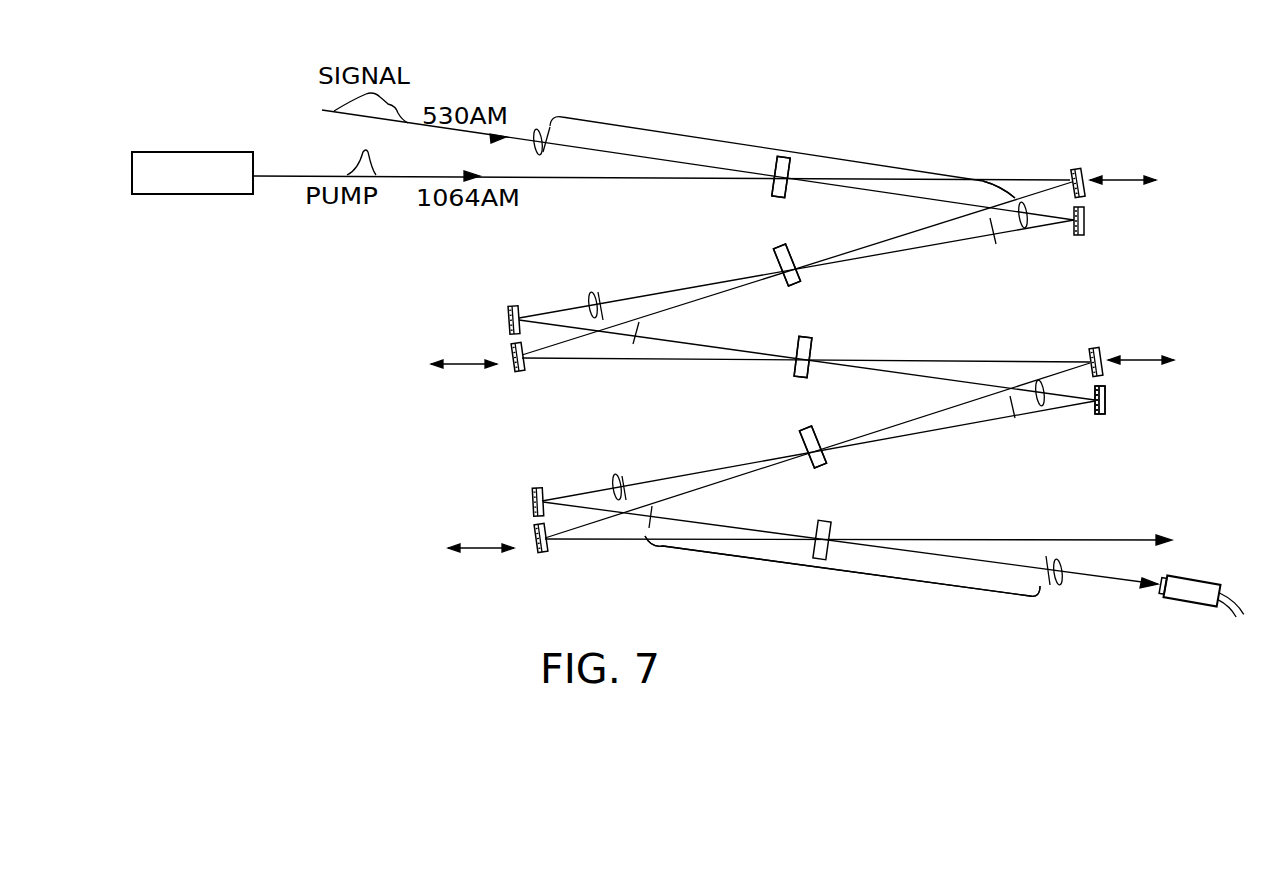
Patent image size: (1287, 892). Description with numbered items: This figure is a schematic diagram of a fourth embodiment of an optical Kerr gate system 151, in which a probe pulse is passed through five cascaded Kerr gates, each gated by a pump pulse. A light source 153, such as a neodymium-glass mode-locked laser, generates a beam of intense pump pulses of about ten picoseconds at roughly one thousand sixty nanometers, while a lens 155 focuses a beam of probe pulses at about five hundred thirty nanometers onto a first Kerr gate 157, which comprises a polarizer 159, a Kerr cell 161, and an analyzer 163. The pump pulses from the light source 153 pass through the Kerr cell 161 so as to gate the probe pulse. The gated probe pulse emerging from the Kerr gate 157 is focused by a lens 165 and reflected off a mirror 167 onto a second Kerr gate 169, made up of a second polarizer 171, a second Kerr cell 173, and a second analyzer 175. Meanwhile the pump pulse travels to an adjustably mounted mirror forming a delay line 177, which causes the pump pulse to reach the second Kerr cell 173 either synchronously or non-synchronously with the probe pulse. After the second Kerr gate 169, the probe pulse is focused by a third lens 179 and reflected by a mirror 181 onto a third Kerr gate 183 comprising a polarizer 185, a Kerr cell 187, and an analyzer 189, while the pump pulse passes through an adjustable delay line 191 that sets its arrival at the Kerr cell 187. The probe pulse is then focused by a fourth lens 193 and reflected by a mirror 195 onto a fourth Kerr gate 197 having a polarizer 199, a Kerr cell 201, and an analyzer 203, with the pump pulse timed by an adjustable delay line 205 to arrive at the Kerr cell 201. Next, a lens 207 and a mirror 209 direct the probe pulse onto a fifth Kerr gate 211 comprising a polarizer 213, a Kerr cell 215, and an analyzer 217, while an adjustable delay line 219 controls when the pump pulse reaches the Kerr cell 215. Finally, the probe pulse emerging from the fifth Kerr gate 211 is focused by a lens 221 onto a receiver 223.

The optical Kerr gate system 151 is at (766, 64).
The light source 153 is at (196, 165).
The lens 155 is at (536, 130).
The Kerr gate 157 is at (783, 150).
The polarizer 159 is at (549, 152).
The Kerr cell 161 is at (776, 196).
The analyzer 163 is at (1008, 222).
The lens 165 is at (1022, 206).
The mirror 167 is at (1084, 230).
The second Kerr gate 169 is at (779, 246).
The second polarizer 171 is at (993, 244).
The second Kerr cell 173 is at (797, 283).
The second analyzer 175 is at (598, 292).
The delay line 177 is at (1078, 168).
The third lens 179 is at (586, 292).
The mirror 181 is at (510, 310).
The third Kerr gate 183 is at (810, 336).
The polarizer 185 is at (636, 344).
The Kerr cell 187 is at (795, 374).
The analyzer 189 is at (1030, 398).
The adjustable delay line 191 is at (512, 372).
The fourth lens 193 is at (1078, 382).
The mirror 195 is at (1105, 410).
The fourth Kerr gate 197 is at (812, 428).
The polarizer 199 is at (1013, 418).
The Kerr cell 201 is at (821, 462).
The analyzer 203 is at (624, 478).
The adjustable delay line 205 is at (1096, 346).
The lens 207 is at (612, 476).
The mirror 209 is at (532, 486).
The fifth Kerr gate 211 is at (834, 574).
The polarizer 213 is at (656, 512).
The Kerr cell 215 is at (827, 528).
The analyzer 217 is at (1047, 558).
The adjustable delay line 219 is at (540, 552).
The lens 221 is at (1062, 580).
The receiver 223 is at (1196, 586).